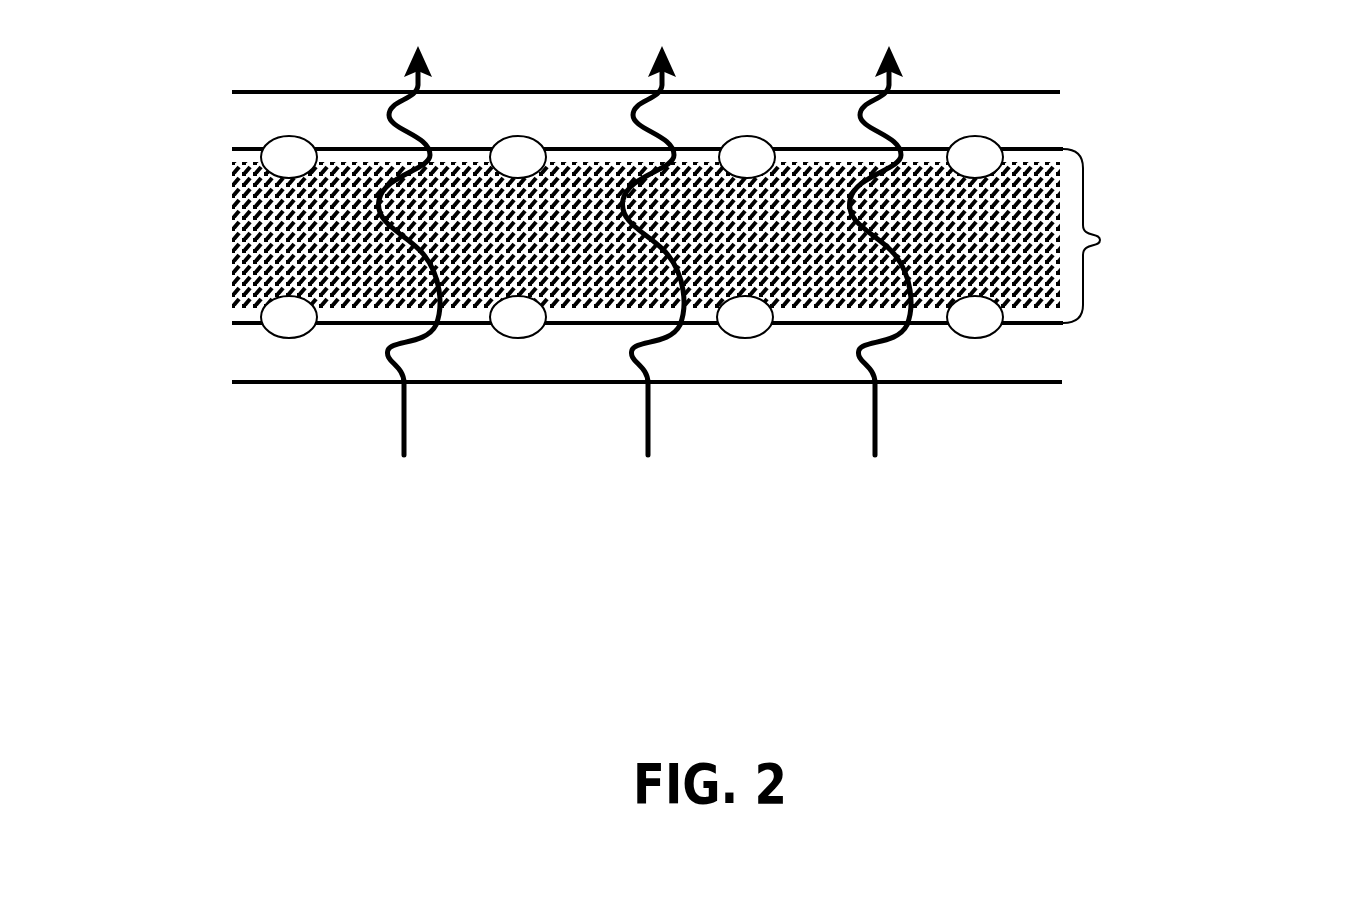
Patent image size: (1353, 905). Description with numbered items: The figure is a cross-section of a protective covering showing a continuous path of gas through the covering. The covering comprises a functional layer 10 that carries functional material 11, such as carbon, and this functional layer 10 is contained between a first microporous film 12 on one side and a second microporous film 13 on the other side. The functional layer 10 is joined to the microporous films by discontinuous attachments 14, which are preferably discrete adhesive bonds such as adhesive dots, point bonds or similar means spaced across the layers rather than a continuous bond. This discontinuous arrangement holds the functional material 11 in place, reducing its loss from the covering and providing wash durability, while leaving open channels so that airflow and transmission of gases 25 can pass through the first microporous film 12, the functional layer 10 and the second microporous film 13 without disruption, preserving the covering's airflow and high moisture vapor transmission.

The functional layer 10 is at (1102, 237).
The functional material 11 is at (1060, 218).
The first microporous film 12 is at (1005, 122).
The second microporous film 13 is at (975, 352).
The discontinuous attachments 14 is at (288, 323).
The gases 25 is at (634, 287).